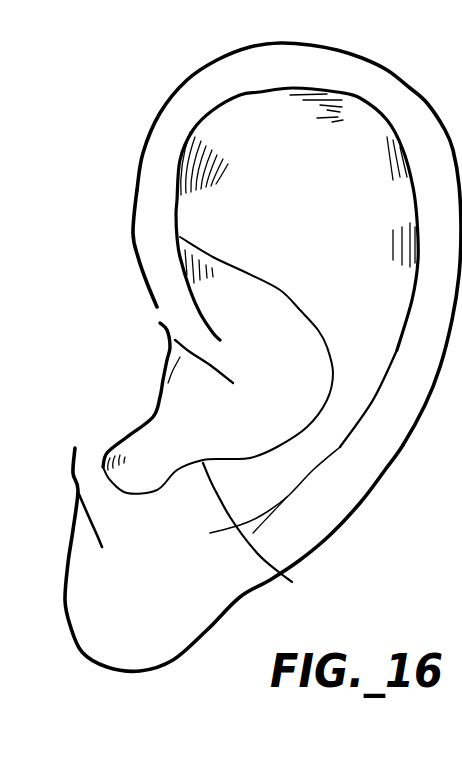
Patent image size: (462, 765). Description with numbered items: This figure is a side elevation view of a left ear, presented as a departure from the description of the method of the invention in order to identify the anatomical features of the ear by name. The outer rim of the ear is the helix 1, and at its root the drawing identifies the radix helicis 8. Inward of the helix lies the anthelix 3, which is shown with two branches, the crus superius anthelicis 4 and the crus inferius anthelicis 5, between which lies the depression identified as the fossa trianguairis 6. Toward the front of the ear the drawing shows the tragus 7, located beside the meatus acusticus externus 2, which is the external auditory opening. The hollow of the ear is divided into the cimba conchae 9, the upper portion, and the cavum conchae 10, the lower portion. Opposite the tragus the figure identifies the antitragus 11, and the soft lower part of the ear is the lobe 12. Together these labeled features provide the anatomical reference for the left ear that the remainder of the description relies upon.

The helix 1 is at (307, 58).
The meatus acusticus externus 2 is at (163, 360).
The anthelix 3 is at (360, 317).
The crus superius anthelicis 4 is at (320, 133).
The crus inferius anthelicis 5 is at (263, 177).
The fossa trianguairis 6 is at (210, 175).
The tragus 7 is at (147, 413).
The radix helicis 8 is at (160, 268).
The cimba conchae 9 is at (223, 303).
The cavum conchae 10 is at (287, 400).
The antitragus 11 is at (282, 573).
The lobe 12 is at (140, 628).